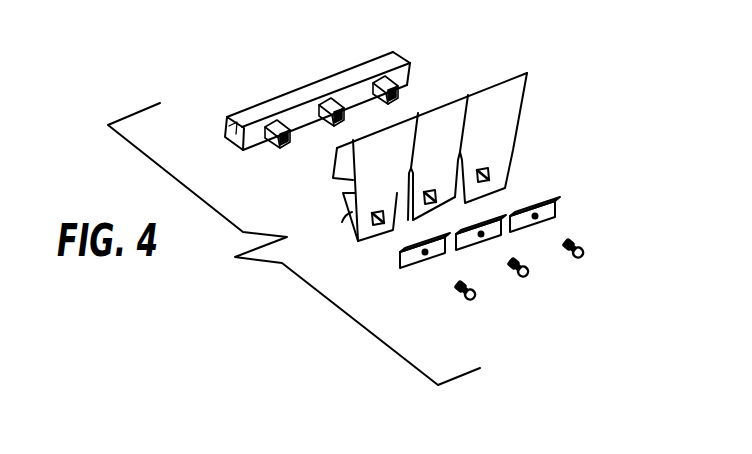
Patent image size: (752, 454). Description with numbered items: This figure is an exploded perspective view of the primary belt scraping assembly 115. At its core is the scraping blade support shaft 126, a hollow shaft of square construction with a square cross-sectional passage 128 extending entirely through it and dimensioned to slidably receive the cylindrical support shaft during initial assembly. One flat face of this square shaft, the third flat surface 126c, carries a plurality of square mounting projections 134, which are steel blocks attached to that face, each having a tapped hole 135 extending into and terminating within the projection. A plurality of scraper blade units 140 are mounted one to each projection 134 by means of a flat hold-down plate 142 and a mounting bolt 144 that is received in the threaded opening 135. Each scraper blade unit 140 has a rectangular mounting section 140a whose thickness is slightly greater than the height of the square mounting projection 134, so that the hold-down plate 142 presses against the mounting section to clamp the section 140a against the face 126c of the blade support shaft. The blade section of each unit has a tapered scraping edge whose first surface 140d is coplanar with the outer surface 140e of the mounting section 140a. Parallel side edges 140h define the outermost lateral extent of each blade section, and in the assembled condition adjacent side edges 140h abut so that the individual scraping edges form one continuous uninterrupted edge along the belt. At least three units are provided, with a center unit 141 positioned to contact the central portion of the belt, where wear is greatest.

The panel 115 is at (216, 270).
The scraping blade support shaft 126 is at (300, 91).
The third flat surface 126c is at (394, 143).
The square cross-sectional passage 128 is at (233, 139).
The square mounting projections 134 is at (277, 127).
The tapped hole 135 is at (266, 187).
The scraper blade units 140 is at (440, 182).
The rectangular mounting section 140a is at (346, 233).
The first surface 140d is at (445, 130).
The outer surface 140e is at (387, 240).
The side edges 140h is at (347, 168).
The center unit 141 is at (448, 146).
The flat hold-down plate 142 is at (412, 263).
The mounting bolt 144 is at (517, 274).